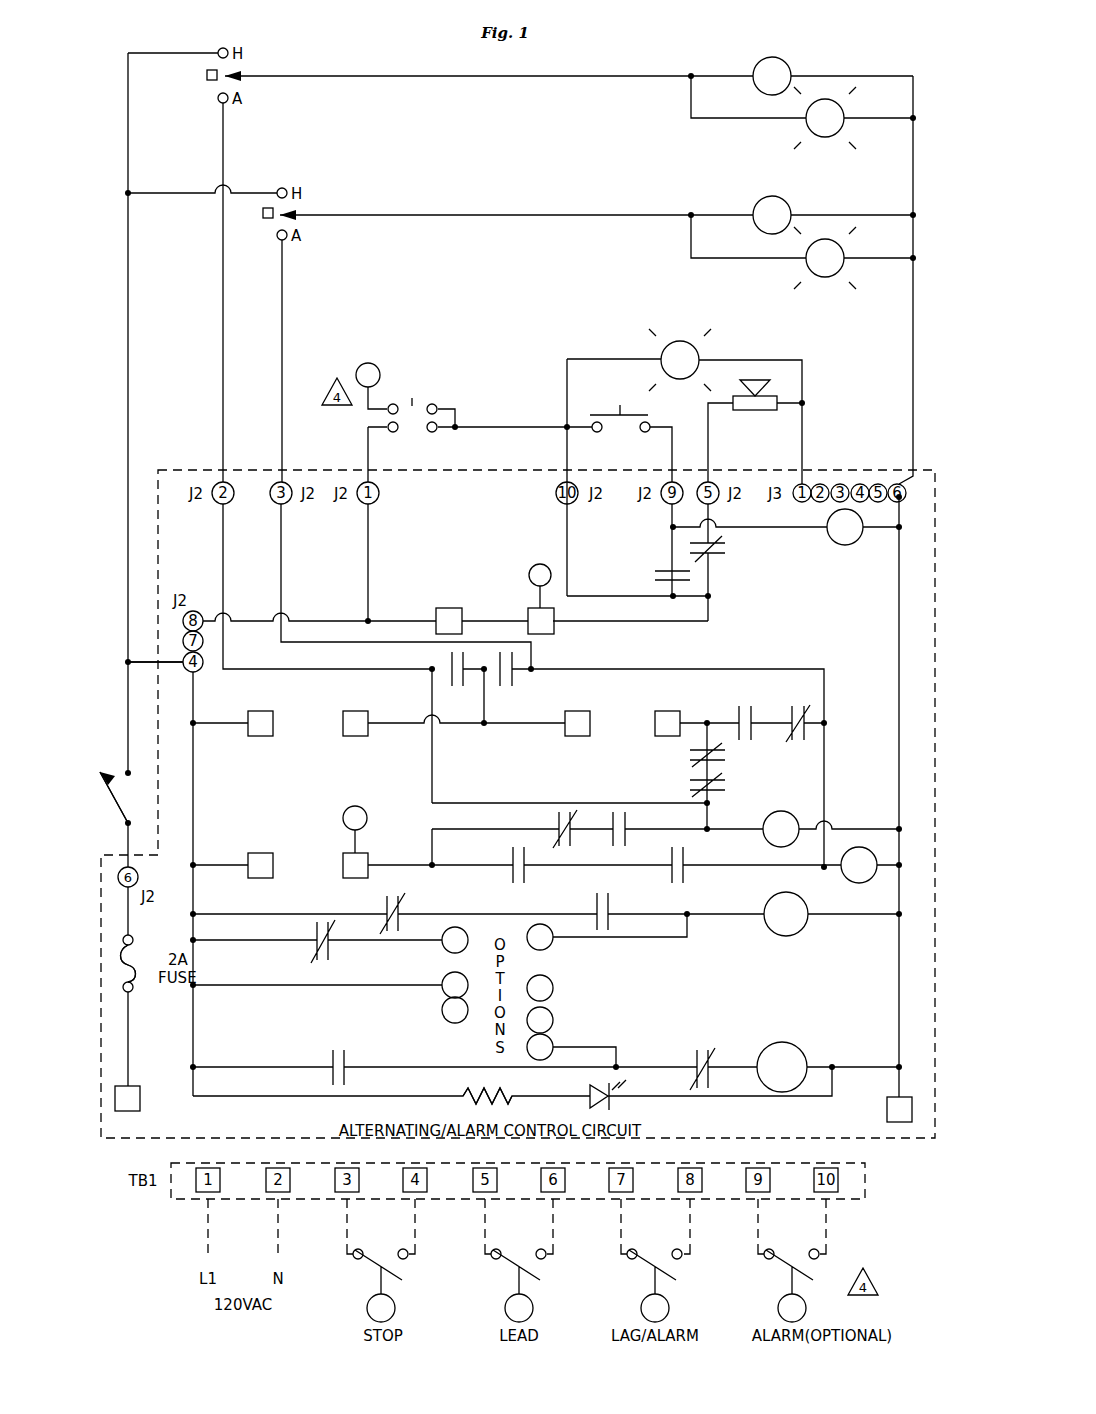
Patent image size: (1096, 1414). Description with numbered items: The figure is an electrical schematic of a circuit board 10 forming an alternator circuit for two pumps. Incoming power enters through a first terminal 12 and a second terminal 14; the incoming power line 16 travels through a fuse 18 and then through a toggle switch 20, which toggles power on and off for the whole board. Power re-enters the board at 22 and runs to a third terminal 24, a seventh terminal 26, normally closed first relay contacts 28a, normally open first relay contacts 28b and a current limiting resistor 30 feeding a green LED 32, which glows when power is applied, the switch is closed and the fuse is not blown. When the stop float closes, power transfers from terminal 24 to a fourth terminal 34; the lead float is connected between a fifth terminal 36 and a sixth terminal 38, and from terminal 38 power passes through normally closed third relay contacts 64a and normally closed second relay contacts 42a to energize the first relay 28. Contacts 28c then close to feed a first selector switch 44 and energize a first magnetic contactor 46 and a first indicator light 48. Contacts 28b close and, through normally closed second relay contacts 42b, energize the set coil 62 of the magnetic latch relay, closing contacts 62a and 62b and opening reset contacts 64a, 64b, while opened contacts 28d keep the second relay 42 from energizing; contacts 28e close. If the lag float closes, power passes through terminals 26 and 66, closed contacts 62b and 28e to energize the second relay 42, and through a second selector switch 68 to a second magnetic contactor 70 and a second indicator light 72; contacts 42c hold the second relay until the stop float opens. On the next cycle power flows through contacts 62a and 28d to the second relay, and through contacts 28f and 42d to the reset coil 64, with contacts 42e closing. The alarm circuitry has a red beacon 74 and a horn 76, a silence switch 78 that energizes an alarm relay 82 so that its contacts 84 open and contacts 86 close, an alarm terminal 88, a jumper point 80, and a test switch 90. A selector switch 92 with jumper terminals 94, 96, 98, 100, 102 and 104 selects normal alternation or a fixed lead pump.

The circuit board 10 is at (915, 442).
The terminal 1 12 is at (122, 1110).
The terminal 2 14 is at (897, 1124).
The incoming power line L1 16 is at (195, 1280).
The fuse 18 is at (122, 952).
The toggle switch SW1 20 is at (85, 810).
The power re-entry point 22 is at (203, 665).
The terminal 3 24 is at (255, 740).
The terminal 7 26 is at (252, 852).
The first relay CR1 28 is at (775, 812).
The normally closed first relay contacts 28a is at (313, 935).
The normally open first relay contacts 28b is at (350, 1058).
The CR1 contacts 28c is at (447, 664).
The normally closed CR1 contacts 28d is at (800, 700).
The CR1 contacts 28e is at (688, 855).
The CR1 contacts 28f is at (405, 898).
The current limiting resistor 30 is at (500, 1083).
The green LED 32 is at (610, 1100).
The terminal 4 34 is at (355, 738).
The terminal 5 36 is at (577, 738).
The terminal 6 38 is at (660, 738).
The second relay CR2 42 is at (860, 847).
The normally closed second relay contacts 42a is at (728, 787).
The normally closed CR2 contacts 42b is at (715, 1060).
The CR2 contacts 42c is at (517, 677).
The CR2 contacts 42d is at (612, 905).
The CR2 contacts 42e is at (630, 822).
The switch SW2 44 is at (198, 88).
The magnetic contactor M1 46 is at (780, 60).
The indicator light G1 48 is at (832, 100).
The SET coil CR3-S 62 is at (803, 1045).
The normally open CR3-S contacts 62a is at (744, 700).
The CR3-S contacts 62b is at (508, 860).
The RESET coil CR3-R 64 is at (800, 930).
The normally closed third relay contacts CR3-R 64a is at (728, 757).
The CR3-R contacts 64b is at (552, 822).
The terminal 8 66 is at (368, 853).
The switch SW3 68 is at (270, 250).
The magnetic contactor M2 70 is at (768, 197).
The indicator light G2 72 is at (831, 240).
The red beacon 74 is at (695, 345).
The horn 76 is at (758, 382).
The silence switch 78 is at (615, 410).
The jumper terminal 80 is at (364, 363).
The relay CR4 82 is at (848, 545).
The CR4 contacts 84 is at (765, 552).
The CR4 contacts / terminal position 10 86 is at (666, 565).
The terminal 9 88 is at (451, 606).
The switch SW4 90 is at (425, 400).
The three position double pole double throw selector switch 92 is at (448, 962).
The jumper terminal 5 94 is at (462, 928).
The jumper terminal 4 96 is at (550, 945).
The jumper terminal 6 98 is at (444, 992).
The jumper terminal 1 100 is at (553, 985).
The jumper terminal 102 is at (553, 1018).
The jumper terminal 104 is at (553, 1043).